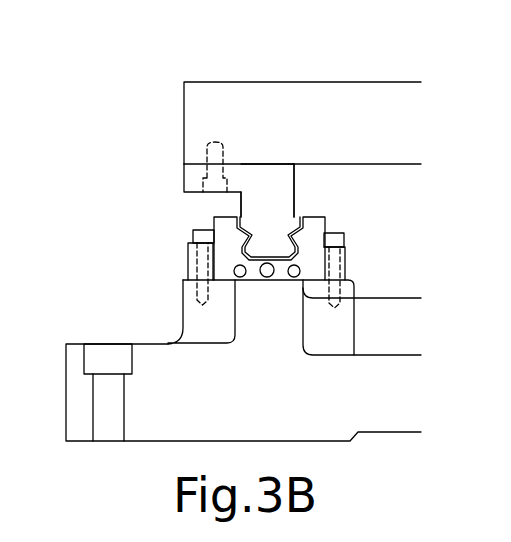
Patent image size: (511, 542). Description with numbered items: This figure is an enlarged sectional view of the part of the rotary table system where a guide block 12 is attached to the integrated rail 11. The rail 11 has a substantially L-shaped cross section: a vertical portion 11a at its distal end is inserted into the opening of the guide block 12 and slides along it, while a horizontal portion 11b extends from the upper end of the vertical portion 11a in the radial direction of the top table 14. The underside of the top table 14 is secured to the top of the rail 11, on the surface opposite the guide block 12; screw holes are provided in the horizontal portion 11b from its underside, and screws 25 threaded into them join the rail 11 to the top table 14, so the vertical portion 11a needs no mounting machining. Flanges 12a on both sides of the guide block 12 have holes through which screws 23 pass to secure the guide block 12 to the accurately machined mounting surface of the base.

The integrated rail 11 is at (312, 180).
The vertical portion 11a is at (297, 201).
The horizontal portion 11b is at (253, 163).
The guide block 12 is at (211, 220).
The flange 12a is at (188, 260).
The top table 14 is at (348, 110).
The screw 23 is at (205, 238).
The screw 25 is at (214, 149).